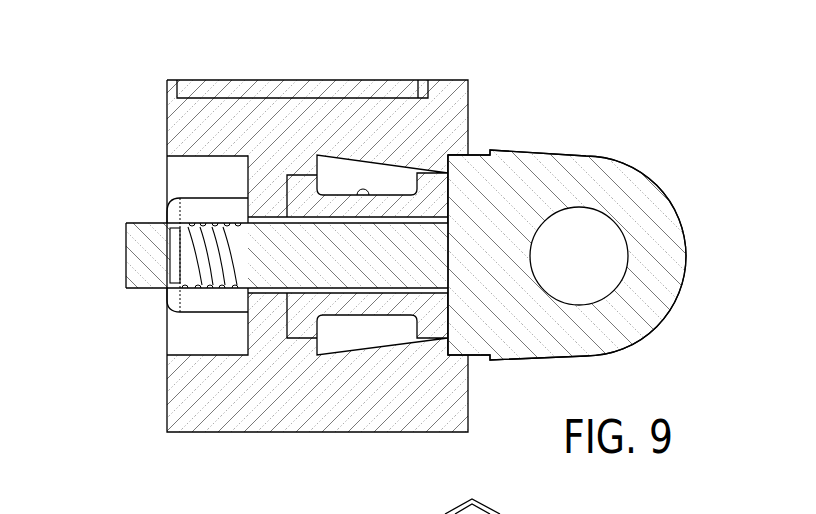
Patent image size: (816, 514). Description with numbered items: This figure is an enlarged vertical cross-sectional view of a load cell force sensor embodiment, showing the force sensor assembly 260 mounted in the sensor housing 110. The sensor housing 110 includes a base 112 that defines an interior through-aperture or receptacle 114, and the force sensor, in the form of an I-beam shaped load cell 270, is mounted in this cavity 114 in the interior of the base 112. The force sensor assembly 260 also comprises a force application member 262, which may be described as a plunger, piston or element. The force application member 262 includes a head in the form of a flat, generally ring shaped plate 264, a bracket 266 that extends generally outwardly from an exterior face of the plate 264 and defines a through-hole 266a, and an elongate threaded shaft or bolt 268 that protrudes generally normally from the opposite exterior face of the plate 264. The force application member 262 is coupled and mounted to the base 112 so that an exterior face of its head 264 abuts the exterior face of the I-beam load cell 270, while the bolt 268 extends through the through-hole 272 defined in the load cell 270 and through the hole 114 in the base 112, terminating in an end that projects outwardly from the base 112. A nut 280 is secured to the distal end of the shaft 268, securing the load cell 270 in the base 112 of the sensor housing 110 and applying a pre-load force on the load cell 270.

The sensor housing 110 is at (417, 259).
The base 112 is at (303, 413).
The through-aperture 114 is at (390, 335).
The force sensor assembly 260 is at (610, 193).
The force application member 262 is at (610, 193).
The plate 264 is at (474, 178).
The bracket 266 is at (651, 215).
The through-hole 266a is at (624, 247).
The threaded shaft 268 is at (350, 272).
The I-beam shaped load cell 270 is at (343, 203).
The through-hole 272 is at (320, 216).
The nut 280 is at (203, 210).